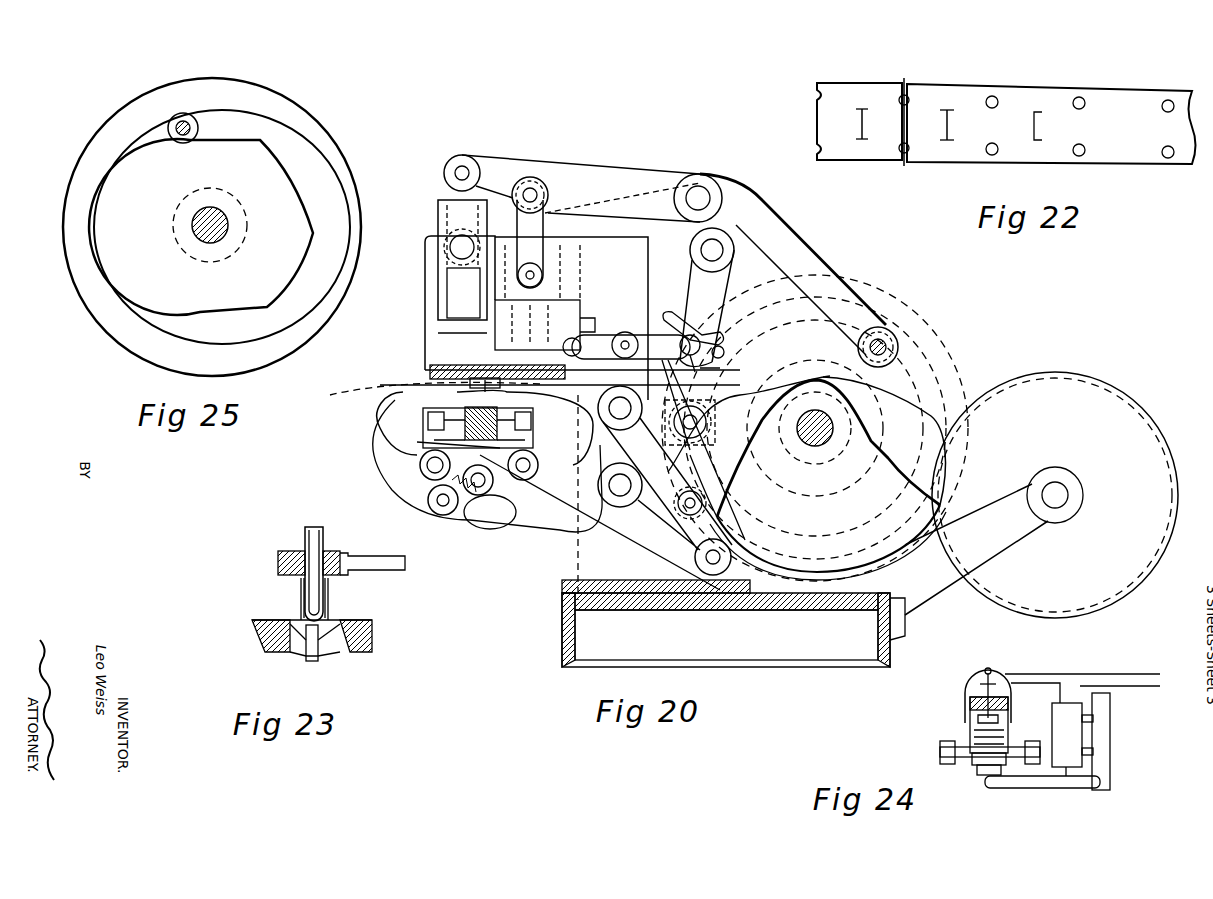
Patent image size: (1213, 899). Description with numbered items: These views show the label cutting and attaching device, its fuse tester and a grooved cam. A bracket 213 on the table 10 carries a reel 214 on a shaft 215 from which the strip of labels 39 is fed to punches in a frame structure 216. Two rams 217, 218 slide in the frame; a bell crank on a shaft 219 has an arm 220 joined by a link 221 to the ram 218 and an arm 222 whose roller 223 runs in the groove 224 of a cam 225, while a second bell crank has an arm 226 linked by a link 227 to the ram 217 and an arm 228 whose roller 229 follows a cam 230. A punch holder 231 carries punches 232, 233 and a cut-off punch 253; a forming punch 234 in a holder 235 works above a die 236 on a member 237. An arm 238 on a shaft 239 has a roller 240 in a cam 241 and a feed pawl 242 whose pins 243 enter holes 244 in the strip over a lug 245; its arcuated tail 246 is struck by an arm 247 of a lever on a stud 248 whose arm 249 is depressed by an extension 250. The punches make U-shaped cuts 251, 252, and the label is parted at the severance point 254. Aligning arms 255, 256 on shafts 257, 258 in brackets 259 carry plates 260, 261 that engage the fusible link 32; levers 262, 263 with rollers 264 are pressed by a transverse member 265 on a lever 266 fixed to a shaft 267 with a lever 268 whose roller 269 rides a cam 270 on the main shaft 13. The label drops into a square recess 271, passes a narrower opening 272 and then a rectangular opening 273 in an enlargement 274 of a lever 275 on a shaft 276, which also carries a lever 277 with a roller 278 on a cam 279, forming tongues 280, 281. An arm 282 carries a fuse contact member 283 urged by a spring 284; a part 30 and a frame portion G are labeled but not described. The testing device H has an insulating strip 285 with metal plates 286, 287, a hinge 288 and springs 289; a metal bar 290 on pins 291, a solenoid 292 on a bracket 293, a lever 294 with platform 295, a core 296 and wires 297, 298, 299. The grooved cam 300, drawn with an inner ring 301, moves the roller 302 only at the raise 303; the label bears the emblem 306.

In FIG. 20, the table 10 is at (726, 630).
In FIG. 25, the main shaft 13 is at (220, 240).
In FIG. 20, the main shaft 13 is at (828, 440).
In FIG. 23, the plate 30 is at (252, 630).
In FIG. 23, the fusible link 32 is at (318, 655).
In FIG. 22, the label 39 is at (836, 92).
In FIG. 23, the label 39 is at (300, 590).
In FIG. 20, the label 39 is at (1012, 372).
In FIG. 20, the bracket 213 is at (976, 549).
In FIG. 20, the reel 214 is at (1055, 495).
In FIG. 20, the shaft 215 is at (1062, 495).
In FIG. 20, the frame structure 216 is at (667, 490).
In FIG. 20, the ram 217 is at (438, 213).
In FIG. 20, the ram 218 is at (570, 258).
In FIG. 20, the shaft 219 is at (702, 193).
In FIG. 20, the arm 220 is at (606, 195).
In FIG. 20, the link 221 is at (530, 244).
In FIG. 20, the arm 222 is at (793, 264).
In FIG. 20, the roller 223 is at (920, 340).
In FIG. 20, the groove 224 is at (935, 352).
In FIG. 20, the cam 225 is at (898, 335).
In FIG. 20, the arm 226 is at (522, 163).
In FIG. 20, the link 227 is at (452, 191).
In FIG. 20, the arm 228 is at (858, 292).
In FIG. 20, the roller 229 is at (883, 412).
In FIG. 20, the cam 230 is at (965, 366).
In FIG. 20, the punch holder 231 is at (540, 322).
In FIG. 20, the punch 232 is at (525, 340).
In FIG. 20, the punch 233 is at (545, 345).
In FIG. 23, the forming punch 234 is at (316, 540).
In FIG. 20, the forming punch 234 is at (438, 333).
In FIG. 20, the holder 235 is at (463, 293).
In FIG. 20, the die 236 is at (430, 368).
In FIG. 20, the member 237 is at (430, 378).
In FIG. 20, the arm 238 is at (707, 308).
In FIG. 20, the shaft 239 is at (705, 250).
In FIG. 20, the roller 240 is at (710, 412).
In FIG. 20, the cam 241 is at (735, 422).
In FIG. 20, the feed pawl 242 is at (720, 345).
In FIG. 20, the pins 243 is at (700, 373).
In FIG. 22, the holes 244 is at (996, 98).
In FIG. 20, the lug 245 is at (687, 372).
In FIG. 20, the arcuated tail 246 is at (675, 315).
In FIG. 20, the arm 247 is at (679, 345).
In FIG. 20, the stud 248 is at (625, 332).
In FIG. 20, the arm 249 is at (626, 347).
In FIG. 20, the extension 250 is at (595, 326).
In FIG. 22, the U-shaped cut 251 is at (1040, 112).
In FIG. 22, the U-shaped cut 252 is at (941, 110).
In FIG. 20, the cut-off punch 253 is at (497, 362).
In FIG. 22, the severance point 254 is at (904, 78).
In FIG. 20, the arm 255 is at (425, 462).
In FIG. 20, the arm 256 is at (540, 468).
In FIG. 20, the shaft 257 is at (432, 470).
In FIG. 20, the shaft 258 is at (535, 478).
In FIG. 20, the brackets 259 is at (548, 552).
In FIG. 20, the metal plate 260 is at (400, 415).
In FIG. 20, the metal plate 261 is at (533, 424).
In FIG. 20, the lever 262 is at (478, 495).
In FIG. 20, the lever 263 is at (512, 525).
In FIG. 20, the rollers 264 is at (482, 532).
In FIG. 20, the transverse member 265 is at (490, 512).
In FIG. 20, the lever 266 is at (487, 466).
In FIG. 20, the shaft 267 is at (618, 465).
In FIG. 20, the lever 268 is at (678, 515).
In FIG. 20, the roller 269 is at (707, 622).
In FIG. 20, the cam 270 is at (790, 570).
In FIG. 20, the square recess 271 is at (420, 370).
In FIG. 20, the narrower opening 272 is at (424, 391).
In FIG. 23, the rectangular opening 273 is at (305, 550).
In FIG. 20, the rectangular opening 273 is at (380, 398).
In FIG. 23, the enlargement 274 is at (278, 562).
In FIG. 23, the lever 275 is at (380, 565).
In FIG. 20, the lever 275 is at (560, 379).
In FIG. 20, the shaft 276 is at (622, 430).
In FIG. 20, the lever 277 is at (580, 588).
In FIG. 20, the roller 278 is at (650, 612).
In FIG. 20, the cam 279 is at (807, 478).
In FIG. 22, the tongue 280 is at (852, 134).
In FIG. 23, the tongue 280 is at (270, 650).
In FIG. 22, the tongue 281 is at (868, 135).
In FIG. 23, the tongue 281 is at (360, 650).
In FIG. 20, the arm 282 is at (432, 510).
In FIG. 20, the fuse contact member 283 is at (400, 445).
In FIG. 20, the spring 284 is at (448, 498).
In FIG. 24, the insulating strip 285 is at (972, 703).
In FIG. 24, the metal plate 286 is at (970, 727).
In FIG. 24, the metal plate 287 is at (1006, 735).
In FIG. 24, the hinge 288 is at (1010, 703).
In FIG. 24, the springs 289 is at (965, 668).
In FIG. 24, the metal bar 290 is at (972, 714).
In FIG. 24, the pins 291 is at (975, 683).
In FIG. 24, the solenoid 292 is at (1072, 735).
In FIG. 24, the bracket 293 is at (1112, 738).
In FIG. 24, the lever 294 is at (1028, 788).
In FIG. 24, the elongated platform 295 is at (980, 768).
In FIG. 24, the core 296 is at (1072, 782).
In FIG. 24, the wire 297 is at (1145, 674).
In FIG. 24, the wire 298 is at (1045, 683).
In FIG. 24, the wire 299 is at (1140, 689).
In FIG. 25, the cam 300 is at (335, 118).
In FIG. 25, the ring 301 is at (118, 274).
In FIG. 25, the roller 302 is at (183, 125).
In FIG. 25, the raise 303 is at (307, 265).
In FIG. 22, the emblem 306 is at (840, 121).
In FIG. 20, the frame G is at (424, 248).
In FIG. 24, the testing device H is at (925, 745).